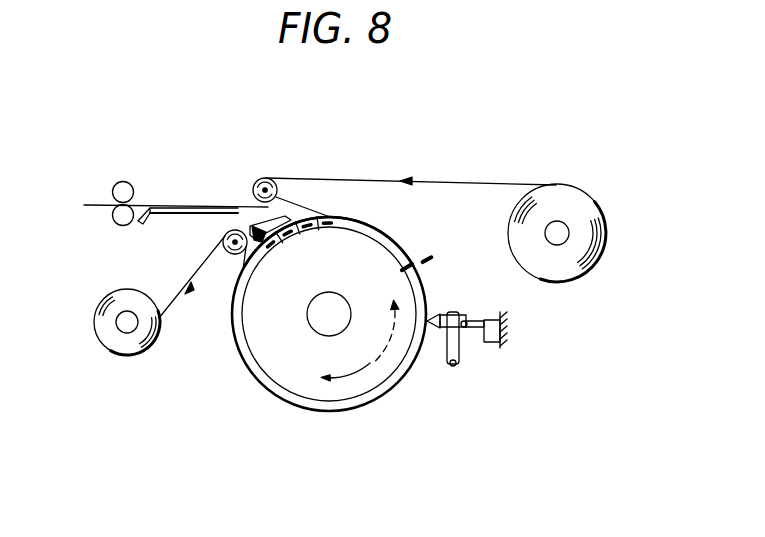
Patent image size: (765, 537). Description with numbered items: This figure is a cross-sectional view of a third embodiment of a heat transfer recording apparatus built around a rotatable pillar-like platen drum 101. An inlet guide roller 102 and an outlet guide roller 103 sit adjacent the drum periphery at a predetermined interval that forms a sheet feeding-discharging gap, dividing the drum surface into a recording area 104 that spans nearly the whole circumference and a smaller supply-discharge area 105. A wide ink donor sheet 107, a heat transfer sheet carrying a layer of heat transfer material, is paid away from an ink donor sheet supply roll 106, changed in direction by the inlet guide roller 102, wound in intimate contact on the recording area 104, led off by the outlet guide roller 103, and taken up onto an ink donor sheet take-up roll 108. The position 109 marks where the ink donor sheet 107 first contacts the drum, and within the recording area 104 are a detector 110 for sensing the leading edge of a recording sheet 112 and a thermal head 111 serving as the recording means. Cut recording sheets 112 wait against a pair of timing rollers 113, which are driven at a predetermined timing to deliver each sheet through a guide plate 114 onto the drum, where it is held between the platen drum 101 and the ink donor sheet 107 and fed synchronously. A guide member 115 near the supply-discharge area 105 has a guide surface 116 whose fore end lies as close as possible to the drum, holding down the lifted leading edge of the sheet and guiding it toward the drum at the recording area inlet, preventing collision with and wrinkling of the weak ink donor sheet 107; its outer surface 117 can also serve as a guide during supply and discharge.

The platen drum 101 is at (317, 377).
The inlet guide roller 102 is at (254, 183).
The outlet guide roller 103 is at (229, 258).
The recording area 104 is at (397, 252).
The supply-discharge area 105 is at (260, 234).
The ink donor sheet supply roll 106 is at (548, 275).
The ink donor sheet 107 is at (451, 181).
The ink donor sheet take-up roll 108 is at (120, 350).
The contact start position 109 is at (356, 213).
The detector 110 is at (421, 253).
The thermal head 111 is at (436, 312).
The recording sheet 112 is at (142, 206).
The timing rollers 113 is at (123, 181).
The guide plate 114 is at (166, 214).
The guide member 115 is at (257, 230).
The guide surface 116 is at (262, 225).
The outer surface 117 is at (285, 212).